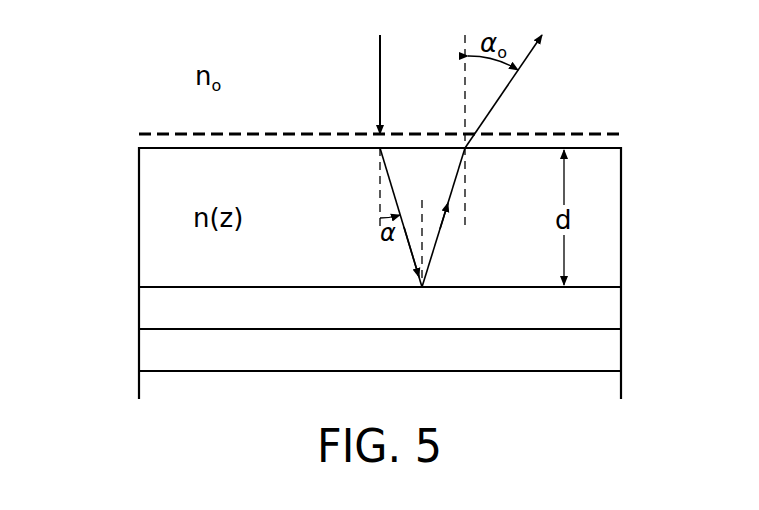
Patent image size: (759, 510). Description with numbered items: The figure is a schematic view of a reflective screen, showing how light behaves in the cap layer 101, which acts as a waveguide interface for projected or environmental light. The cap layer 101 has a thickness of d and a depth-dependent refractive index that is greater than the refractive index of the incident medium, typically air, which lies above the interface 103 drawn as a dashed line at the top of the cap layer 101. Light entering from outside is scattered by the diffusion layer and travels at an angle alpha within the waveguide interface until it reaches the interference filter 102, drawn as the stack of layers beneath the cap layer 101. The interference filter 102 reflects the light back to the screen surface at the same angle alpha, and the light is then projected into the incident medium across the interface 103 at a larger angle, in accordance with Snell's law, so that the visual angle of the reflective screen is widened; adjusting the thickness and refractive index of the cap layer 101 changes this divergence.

The cap layer 101 is at (137, 216).
The interference filter 102 is at (126, 288).
The interface / surface between ambient n_o and film 103 is at (137, 132).